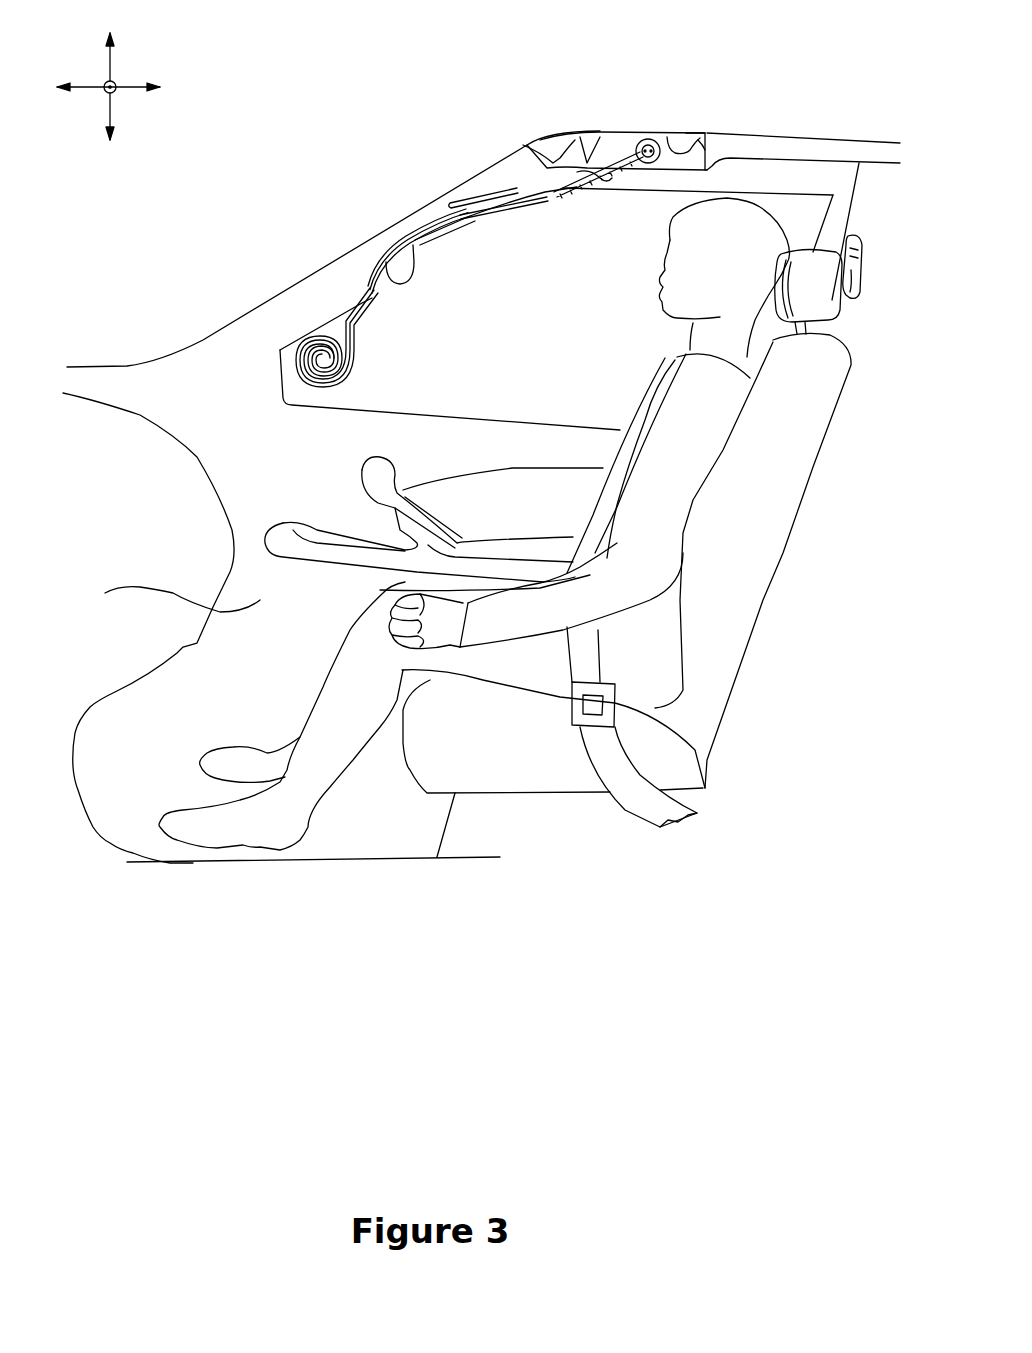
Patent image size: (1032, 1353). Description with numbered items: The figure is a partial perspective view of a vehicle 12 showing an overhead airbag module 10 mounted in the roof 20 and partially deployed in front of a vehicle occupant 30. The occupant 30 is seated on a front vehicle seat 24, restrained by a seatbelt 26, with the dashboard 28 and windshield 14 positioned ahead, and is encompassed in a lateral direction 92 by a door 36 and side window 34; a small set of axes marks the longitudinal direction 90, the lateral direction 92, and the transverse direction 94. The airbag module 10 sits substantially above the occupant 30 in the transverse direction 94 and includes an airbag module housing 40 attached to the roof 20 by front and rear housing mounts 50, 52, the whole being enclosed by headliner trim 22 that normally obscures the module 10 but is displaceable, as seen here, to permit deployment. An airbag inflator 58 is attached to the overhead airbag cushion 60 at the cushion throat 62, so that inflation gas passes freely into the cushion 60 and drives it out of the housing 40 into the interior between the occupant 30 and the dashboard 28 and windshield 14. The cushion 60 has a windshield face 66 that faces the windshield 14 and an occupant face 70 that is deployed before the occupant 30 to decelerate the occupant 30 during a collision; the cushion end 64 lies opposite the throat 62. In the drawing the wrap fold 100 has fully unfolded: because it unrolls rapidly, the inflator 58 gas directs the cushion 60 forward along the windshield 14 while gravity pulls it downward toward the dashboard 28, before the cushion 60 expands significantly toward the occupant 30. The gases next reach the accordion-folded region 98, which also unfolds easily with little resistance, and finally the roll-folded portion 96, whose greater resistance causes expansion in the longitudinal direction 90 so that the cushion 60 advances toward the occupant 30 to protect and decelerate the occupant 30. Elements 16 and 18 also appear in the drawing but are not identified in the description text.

The overhead airbag module 10 is at (512, 112).
The vehicle 12 is at (262, 206).
The windshield 14 is at (418, 222).
The trim panel 16 is at (450, 203).
The channel 18 is at (503, 163).
The roof 20 is at (593, 129).
The headliner trim 22 is at (872, 165).
The vehicle seat 24 is at (810, 446).
The seatbelt 26 is at (597, 515).
The dashboard 28 is at (160, 491).
The vehicle occupant 30 is at (705, 434).
The side window 34 is at (652, 338).
The door 36 is at (772, 178).
The airbag module housing 40 is at (647, 164).
The front housing mount 50 is at (577, 139).
The rear housing mount 52 is at (688, 134).
The airbag inflator 58 is at (658, 163).
The overhead airbag cushion 60 is at (272, 292).
The cushion throat 62 is at (522, 198).
The cushion end 64 is at (157, 597).
The windshield face 66 is at (427, 231).
The occupant face 70 is at (372, 277).
The longitudinal direction 90 is at (128, 86).
The lateral direction 92 is at (115, 96).
The transverse direction 94 is at (111, 62).
The roll-folded portion 96 is at (275, 353).
The accordion-folded region 98 is at (360, 302).
The wrap fold 100 is at (423, 233).